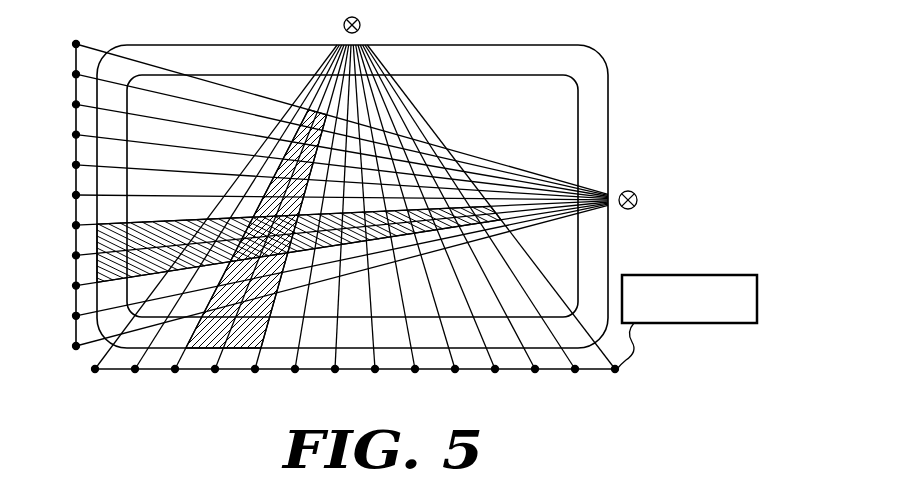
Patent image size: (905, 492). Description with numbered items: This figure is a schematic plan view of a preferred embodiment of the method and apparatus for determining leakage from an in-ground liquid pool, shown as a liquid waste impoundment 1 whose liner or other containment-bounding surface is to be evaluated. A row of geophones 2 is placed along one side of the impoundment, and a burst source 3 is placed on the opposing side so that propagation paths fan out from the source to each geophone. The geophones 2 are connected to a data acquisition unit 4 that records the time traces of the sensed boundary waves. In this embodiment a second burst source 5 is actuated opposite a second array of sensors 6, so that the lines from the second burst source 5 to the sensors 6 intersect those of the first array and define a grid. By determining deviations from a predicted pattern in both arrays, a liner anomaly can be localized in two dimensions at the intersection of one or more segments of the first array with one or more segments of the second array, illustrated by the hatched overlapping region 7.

The liquid waste impoundment 1 is at (513, 119).
The geophones 2 is at (138, 373).
The burst source 3 is at (361, 20).
The data acquisition unit 4 is at (661, 275).
The second burst source 5 is at (636, 193).
The second array of sensors 6 is at (73, 316).
The hatched common coverage zone 7 is at (268, 273).